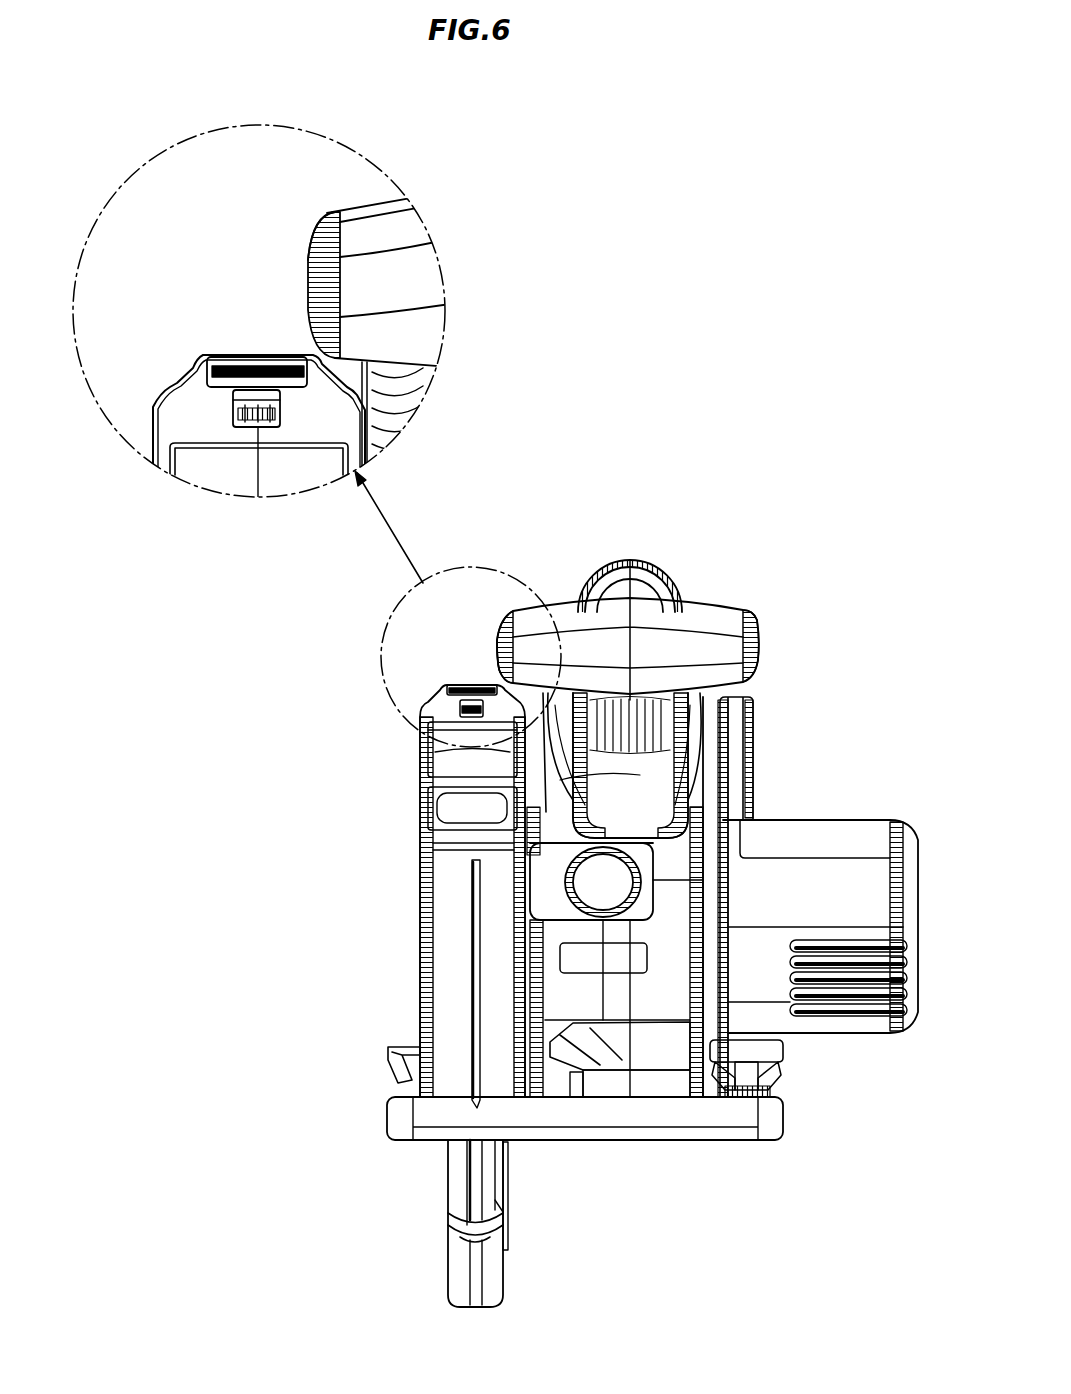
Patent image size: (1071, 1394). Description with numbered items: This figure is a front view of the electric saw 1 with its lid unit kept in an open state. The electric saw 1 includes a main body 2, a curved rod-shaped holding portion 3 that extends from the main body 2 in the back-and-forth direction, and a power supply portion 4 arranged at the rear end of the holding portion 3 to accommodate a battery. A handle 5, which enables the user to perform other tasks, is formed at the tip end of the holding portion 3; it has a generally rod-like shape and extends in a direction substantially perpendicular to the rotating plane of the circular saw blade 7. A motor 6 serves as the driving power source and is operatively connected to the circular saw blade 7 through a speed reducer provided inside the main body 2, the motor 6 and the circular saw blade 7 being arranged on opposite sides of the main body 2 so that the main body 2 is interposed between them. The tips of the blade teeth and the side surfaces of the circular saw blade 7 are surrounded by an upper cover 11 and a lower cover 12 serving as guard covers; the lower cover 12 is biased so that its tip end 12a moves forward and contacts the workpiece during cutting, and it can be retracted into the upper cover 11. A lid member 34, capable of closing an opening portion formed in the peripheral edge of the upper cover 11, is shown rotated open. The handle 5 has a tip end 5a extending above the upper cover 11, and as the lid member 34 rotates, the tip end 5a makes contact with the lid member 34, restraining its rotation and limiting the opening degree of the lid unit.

The electric saw 1 is at (747, 522).
The main body 2 is at (745, 778).
The holding portion 3 is at (665, 574).
The power supply portion 4 is at (755, 701).
The handle 5 is at (356, 206).
The tip end 5a is at (308, 280).
The motor 6 is at (864, 822).
The circular saw blade 7 is at (462, 1150).
The upper cover 11 is at (420, 937).
The lower cover 12 is at (450, 1250).
The tip end 12a is at (495, 1207).
The lid member 34 is at (172, 389).